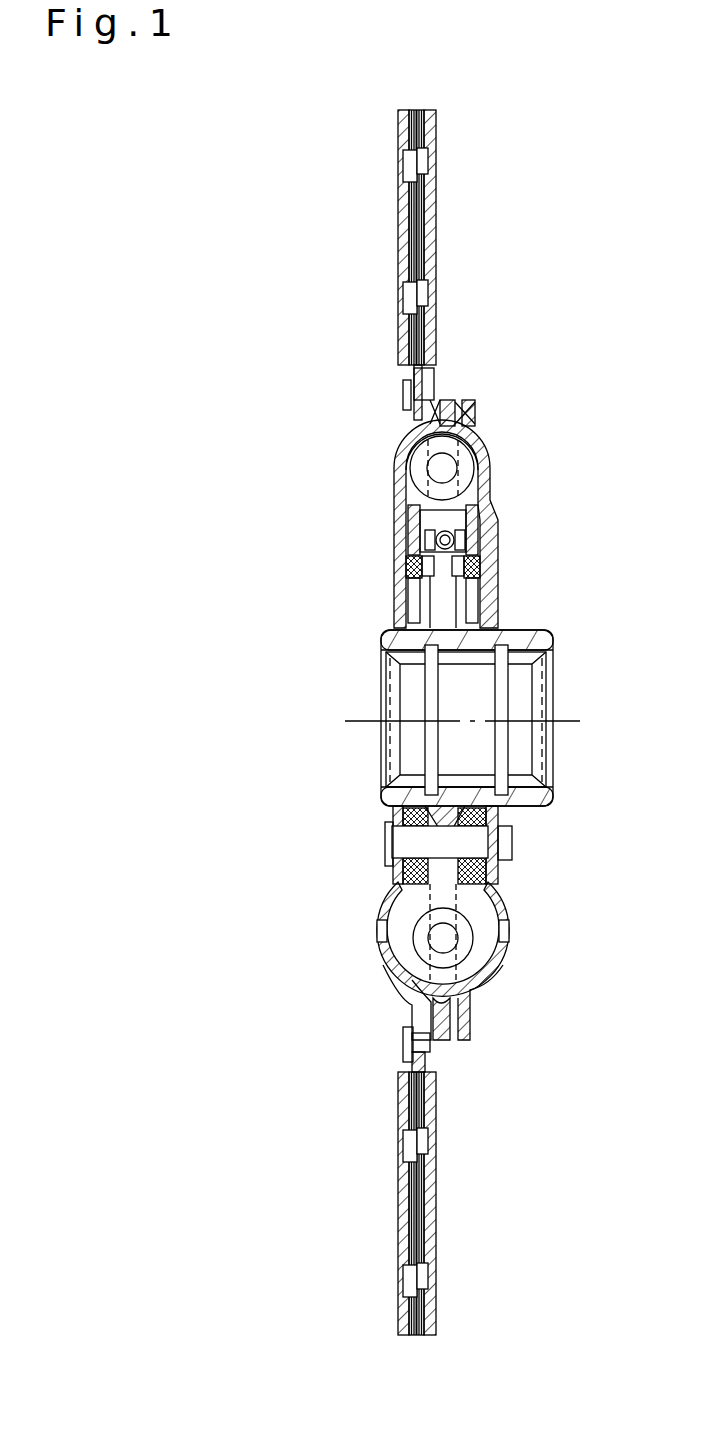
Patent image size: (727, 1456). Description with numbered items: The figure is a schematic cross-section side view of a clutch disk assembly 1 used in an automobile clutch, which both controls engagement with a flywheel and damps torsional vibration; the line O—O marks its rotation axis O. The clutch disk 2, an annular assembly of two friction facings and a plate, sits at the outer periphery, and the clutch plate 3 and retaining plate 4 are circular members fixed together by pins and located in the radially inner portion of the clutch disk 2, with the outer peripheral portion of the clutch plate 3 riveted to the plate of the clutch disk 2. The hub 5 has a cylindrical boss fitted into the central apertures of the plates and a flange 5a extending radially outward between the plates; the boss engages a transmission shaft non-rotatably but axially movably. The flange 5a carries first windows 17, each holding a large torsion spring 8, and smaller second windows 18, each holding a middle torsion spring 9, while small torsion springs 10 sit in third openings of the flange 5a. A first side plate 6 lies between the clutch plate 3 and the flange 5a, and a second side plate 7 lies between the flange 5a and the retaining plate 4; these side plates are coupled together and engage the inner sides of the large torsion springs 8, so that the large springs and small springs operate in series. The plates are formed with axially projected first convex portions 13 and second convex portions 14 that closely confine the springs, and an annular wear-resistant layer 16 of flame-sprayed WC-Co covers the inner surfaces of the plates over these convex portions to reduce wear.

The clutch disk assembly 1 is at (627, 317).
The clutch disk 2 is at (365, 240).
The clutch plate 3 is at (398, 524).
The retaining plate 4 is at (497, 530).
The hub 5 is at (555, 635).
The flange 5a is at (440, 405).
The first side plate 6 is at (400, 572).
The second side plate 7 is at (482, 568).
The large torsion spring 8 is at (483, 945).
The middle torsion spring 9 is at (483, 440).
The small torsion spring 10 is at (480, 505).
The first convex portion 13 is at (380, 915).
The second convex portion 14 is at (398, 460).
The wear-resistant layer 16 is at (400, 435).
The first window 17 is at (478, 1005).
The second window 18 is at (475, 425).
The rotation axis O is at (461, 726).